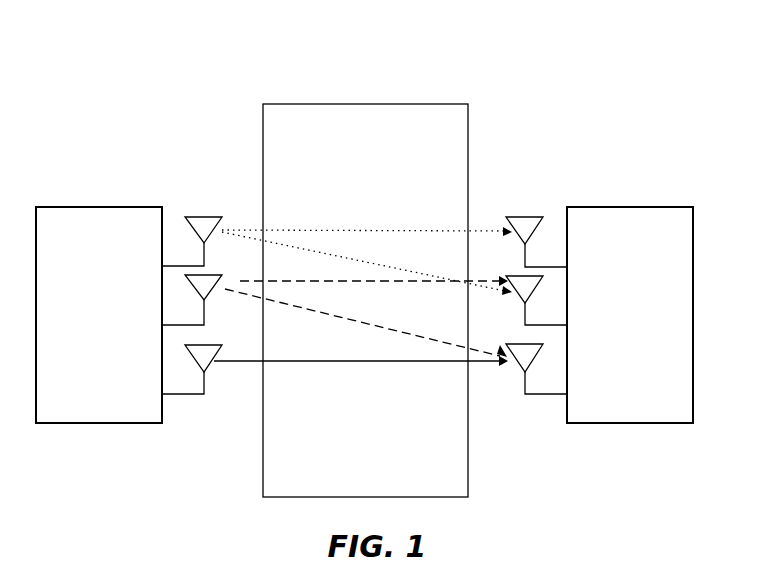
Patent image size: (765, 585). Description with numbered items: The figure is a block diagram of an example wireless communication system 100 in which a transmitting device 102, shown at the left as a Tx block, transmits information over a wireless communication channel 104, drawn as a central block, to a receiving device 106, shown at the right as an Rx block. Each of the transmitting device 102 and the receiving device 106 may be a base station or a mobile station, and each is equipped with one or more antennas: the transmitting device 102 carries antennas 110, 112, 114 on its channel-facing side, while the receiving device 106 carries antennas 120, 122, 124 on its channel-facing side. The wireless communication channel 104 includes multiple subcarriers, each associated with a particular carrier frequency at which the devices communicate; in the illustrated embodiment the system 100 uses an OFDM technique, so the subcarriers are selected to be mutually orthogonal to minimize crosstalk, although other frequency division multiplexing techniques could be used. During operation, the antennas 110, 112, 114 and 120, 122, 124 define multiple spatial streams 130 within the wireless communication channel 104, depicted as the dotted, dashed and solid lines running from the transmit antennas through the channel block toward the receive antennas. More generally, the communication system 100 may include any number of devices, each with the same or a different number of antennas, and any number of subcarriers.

The communication system 100 is at (257, 52).
The transmitting device 102 is at (73, 424).
The wireless communication channel 104 is at (468, 152).
The receiving device 106 is at (633, 424).
The antenna 110 is at (193, 228).
The antenna 112 is at (212, 291).
The antenna 114 is at (209, 372).
The antenna 120 is at (531, 217).
The antenna 122 is at (520, 299).
The antenna 124 is at (518, 367).
The spatial streams 130 is at (312, 211).